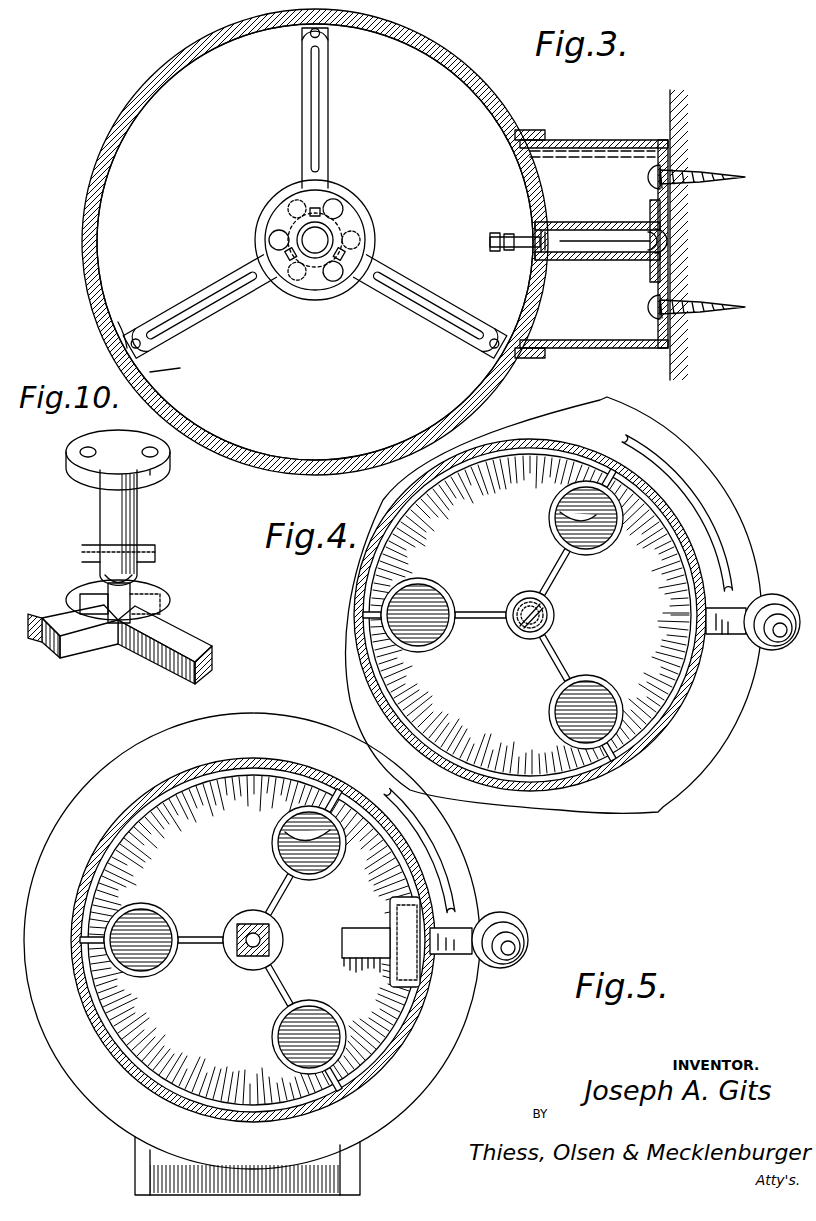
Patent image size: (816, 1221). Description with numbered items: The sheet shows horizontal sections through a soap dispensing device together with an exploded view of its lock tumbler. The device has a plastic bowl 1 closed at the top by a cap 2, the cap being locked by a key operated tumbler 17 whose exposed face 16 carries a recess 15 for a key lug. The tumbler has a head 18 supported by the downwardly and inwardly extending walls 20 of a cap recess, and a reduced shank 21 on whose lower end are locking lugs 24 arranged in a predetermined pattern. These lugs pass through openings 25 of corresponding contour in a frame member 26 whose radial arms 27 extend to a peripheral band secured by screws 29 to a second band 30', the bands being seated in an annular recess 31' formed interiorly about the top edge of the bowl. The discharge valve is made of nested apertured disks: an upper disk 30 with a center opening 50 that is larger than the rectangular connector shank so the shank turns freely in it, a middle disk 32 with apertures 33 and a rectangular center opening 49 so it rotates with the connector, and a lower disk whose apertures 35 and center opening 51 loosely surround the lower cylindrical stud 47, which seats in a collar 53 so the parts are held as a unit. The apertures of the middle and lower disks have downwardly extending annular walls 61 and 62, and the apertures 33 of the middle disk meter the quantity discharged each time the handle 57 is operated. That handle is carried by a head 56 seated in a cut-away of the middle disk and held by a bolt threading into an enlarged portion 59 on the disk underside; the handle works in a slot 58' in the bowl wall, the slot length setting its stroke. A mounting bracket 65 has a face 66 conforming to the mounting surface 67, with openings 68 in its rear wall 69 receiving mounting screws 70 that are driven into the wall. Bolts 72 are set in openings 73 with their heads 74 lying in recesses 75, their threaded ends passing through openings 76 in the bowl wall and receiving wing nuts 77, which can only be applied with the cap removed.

In FIG. 3, the bowl 1 is at (116, 124).
In FIG. 4, the bowl 1 is at (715, 740).
In FIG. 5, the bowl 1 is at (98, 778).
In FIG. 3, the cap 2 is at (116, 188).
In FIG. 10, the recess 15 is at (150, 447).
In FIG. 10, the exposed face 16 is at (82, 463).
In FIG. 10, the tumbler 17 is at (137, 497).
In FIG. 10, the head 18 is at (170, 470).
In FIG. 3, the walls 20 is at (298, 200).
In FIG. 10, the walls 20 is at (155, 553).
In FIG. 10, the reduced shank 21 is at (100, 526).
In FIG. 3, the locking lugs 24 is at (340, 208).
In FIG. 3, the openings 25 is at (283, 218).
In FIG. 10, the openings 25 is at (105, 598).
In FIG. 3, the frame member 26 is at (334, 232).
In FIG. 10, the frame member 26 is at (150, 596).
In FIG. 3, the radial arms 27 is at (328, 136).
In FIG. 10, the radial arms 27 is at (56, 628).
In FIG. 3, the screws 29 is at (150, 347).
In FIG. 4, the upper disk 30 is at (530, 615).
In FIG. 5, the upper disk 30 is at (253, 940).
In FIG. 3, the band 30' is at (131, 320).
In FIG. 3, the recess 31' is at (179, 381).
In FIG. 5, the middle disk 32 is at (204, 1059).
In FIG. 5, the apertures 33 is at (290, 832).
In FIG. 4, the apertures 35 is at (416, 594).
In FIG. 5, the lower cylindrical stud 47 is at (256, 956).
In FIG. 5, the center opening 49 is at (270, 934).
In FIG. 4, the opening 50 is at (553, 614).
In FIG. 5, the opening 50 is at (250, 928).
In FIG. 4, the center opening 51 is at (520, 638).
In FIG. 4, the collar 53 is at (548, 626).
In FIG. 5, the head 56 is at (392, 920).
In FIG. 4, the handle 57 is at (774, 604).
In FIG. 5, the handle 57 is at (506, 928).
In FIG. 4, the slot 58' is at (701, 513).
In FIG. 5, the slot 58' is at (454, 850).
In FIG. 5, the enlarged portion 59 is at (378, 975).
In FIG. 5, the annular walls 61 is at (272, 860).
In FIG. 4, the annular walls 62 is at (455, 598).
In FIG. 3, the mounting bracket 65 is at (562, 140).
In FIG. 5, the mounting bracket 65 is at (148, 1176).
In FIG. 3, the face 66 is at (666, 130).
In FIG. 3, the surface 67 is at (668, 100).
In FIG. 3, the openings 68 is at (666, 162).
In FIG. 3, the rear wall 69 is at (650, 212).
In FIG. 3, the mounting screws 70 is at (732, 186).
In FIG. 3, the bolts 72 is at (584, 232).
In FIG. 3, the openings 73 is at (576, 260).
In FIG. 3, the heads 74 is at (626, 246).
In FIG. 3, the recesses 75 is at (654, 262).
In FIG. 3, the openings 76 is at (547, 232).
In FIG. 3, the wing nuts 77 is at (518, 236).